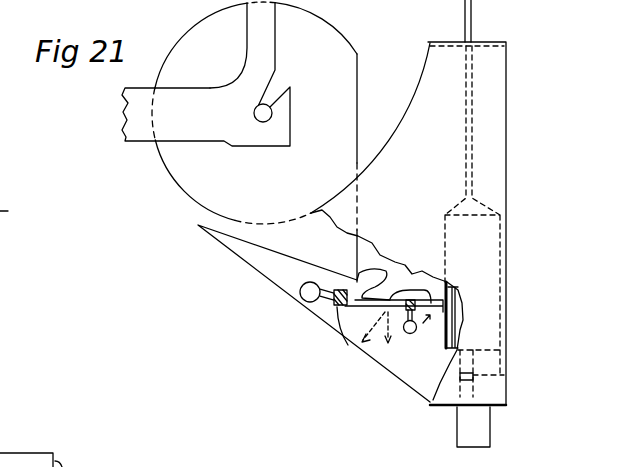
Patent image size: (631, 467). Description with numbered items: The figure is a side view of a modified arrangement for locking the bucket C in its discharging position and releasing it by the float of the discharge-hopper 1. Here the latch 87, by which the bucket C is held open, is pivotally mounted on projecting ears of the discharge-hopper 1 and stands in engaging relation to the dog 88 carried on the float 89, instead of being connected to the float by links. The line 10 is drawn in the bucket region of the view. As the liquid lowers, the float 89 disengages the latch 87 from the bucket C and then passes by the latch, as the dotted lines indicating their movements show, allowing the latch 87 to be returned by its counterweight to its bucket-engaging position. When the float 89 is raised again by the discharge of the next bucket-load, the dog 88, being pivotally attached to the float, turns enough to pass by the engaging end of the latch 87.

The discharge-hopper 1 is at (497, 132).
The guide slot line 10 is at (253, 41).
The latch 87 is at (364, 276).
The dog 88 is at (410, 300).
The float 89 is at (445, 338).
The bucket C is at (292, 201).